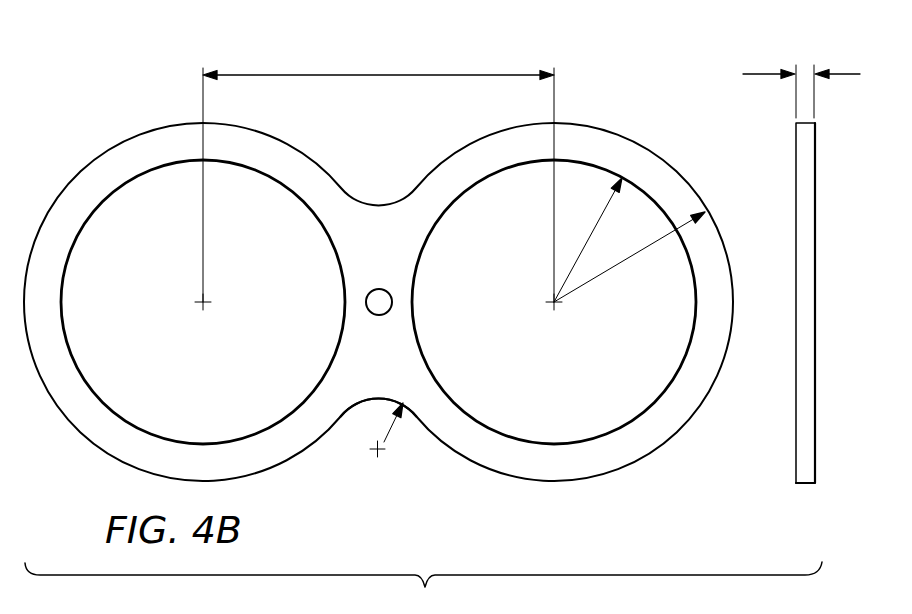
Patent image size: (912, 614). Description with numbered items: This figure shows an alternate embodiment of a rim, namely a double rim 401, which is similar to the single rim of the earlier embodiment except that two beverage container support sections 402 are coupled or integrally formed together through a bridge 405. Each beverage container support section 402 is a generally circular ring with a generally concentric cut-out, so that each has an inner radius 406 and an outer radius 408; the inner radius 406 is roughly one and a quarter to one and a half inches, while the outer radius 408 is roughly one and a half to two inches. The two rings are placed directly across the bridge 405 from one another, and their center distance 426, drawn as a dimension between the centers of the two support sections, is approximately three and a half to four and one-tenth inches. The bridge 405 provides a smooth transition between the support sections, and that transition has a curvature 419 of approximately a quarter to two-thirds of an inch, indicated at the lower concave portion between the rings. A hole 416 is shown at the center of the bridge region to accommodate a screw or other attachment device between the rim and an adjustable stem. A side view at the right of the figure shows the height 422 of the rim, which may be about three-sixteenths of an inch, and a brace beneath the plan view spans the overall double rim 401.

The double rim 401 is at (140, 98).
The beverage container support section 402 is at (592, 480).
The bridge 405 is at (362, 358).
The inner radius 406 is at (605, 207).
The outer radius 408 is at (658, 205).
The hole 416 is at (385, 288).
The curvature 419 is at (384, 442).
The height 422 is at (804, 72).
The center distance 426 is at (450, 75).